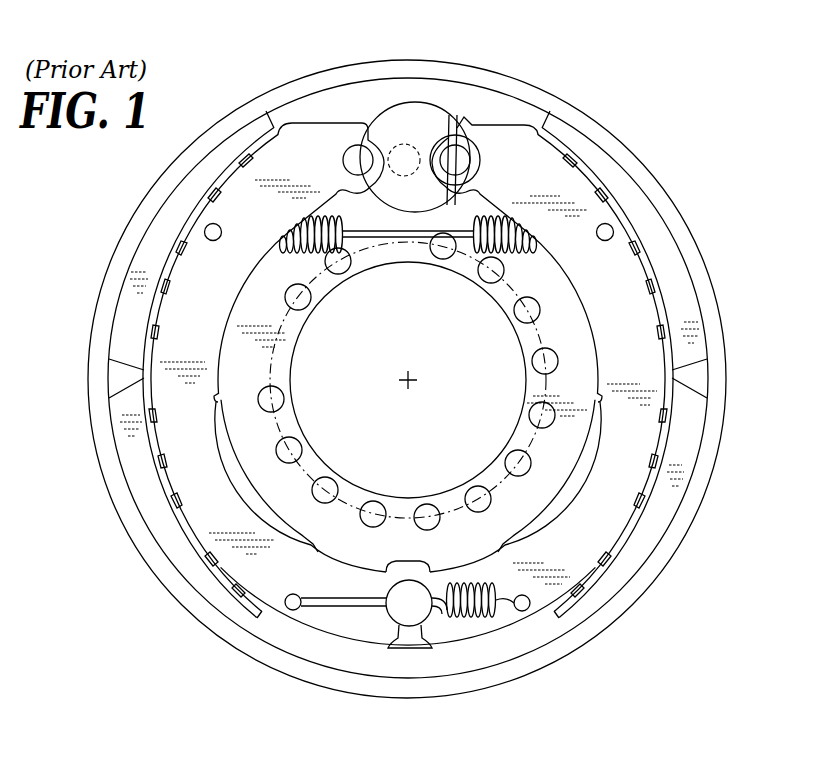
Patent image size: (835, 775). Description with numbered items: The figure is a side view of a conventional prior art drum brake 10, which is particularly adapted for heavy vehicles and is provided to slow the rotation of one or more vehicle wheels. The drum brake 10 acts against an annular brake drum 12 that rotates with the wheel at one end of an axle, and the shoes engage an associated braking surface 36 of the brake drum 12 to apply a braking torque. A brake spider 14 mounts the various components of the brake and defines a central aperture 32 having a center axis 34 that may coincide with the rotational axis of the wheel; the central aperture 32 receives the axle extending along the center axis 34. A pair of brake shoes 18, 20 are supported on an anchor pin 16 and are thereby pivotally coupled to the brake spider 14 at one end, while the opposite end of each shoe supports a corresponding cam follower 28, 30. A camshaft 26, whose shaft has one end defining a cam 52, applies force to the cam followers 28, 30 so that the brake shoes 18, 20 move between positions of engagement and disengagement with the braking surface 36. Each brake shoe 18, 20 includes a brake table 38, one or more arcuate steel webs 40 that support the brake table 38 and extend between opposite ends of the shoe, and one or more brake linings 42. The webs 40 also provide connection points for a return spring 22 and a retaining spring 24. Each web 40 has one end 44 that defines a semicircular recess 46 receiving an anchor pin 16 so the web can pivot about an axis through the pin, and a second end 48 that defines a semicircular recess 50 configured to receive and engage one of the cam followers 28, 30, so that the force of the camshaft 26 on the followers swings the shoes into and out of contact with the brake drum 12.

The drum brake 10 is at (314, 104).
The brake drum 12 is at (583, 634).
The brake spider 14 is at (550, 450).
The anchor pin 16 is at (397, 616).
The brake shoe 18 is at (183, 466).
The brake shoe 20 is at (640, 440).
The return spring 22 is at (540, 236).
The retaining spring 24 is at (500, 650).
The camshaft 26 is at (396, 139).
The cam follower 28 is at (363, 163).
The cam follower 30 is at (453, 175).
The central aperture 32 is at (470, 457).
The center axis 34 is at (401, 383).
The braking surface 36 is at (490, 625).
The brake table 38 is at (673, 373).
The web 40 is at (612, 313).
The brake lining 42 is at (695, 406).
The end of web 44 is at (456, 636).
The semicircular recess 46 is at (425, 627).
The second end of web 48 is at (488, 152).
The semicircular recess 50 is at (452, 147).
The cam 52 is at (420, 117).